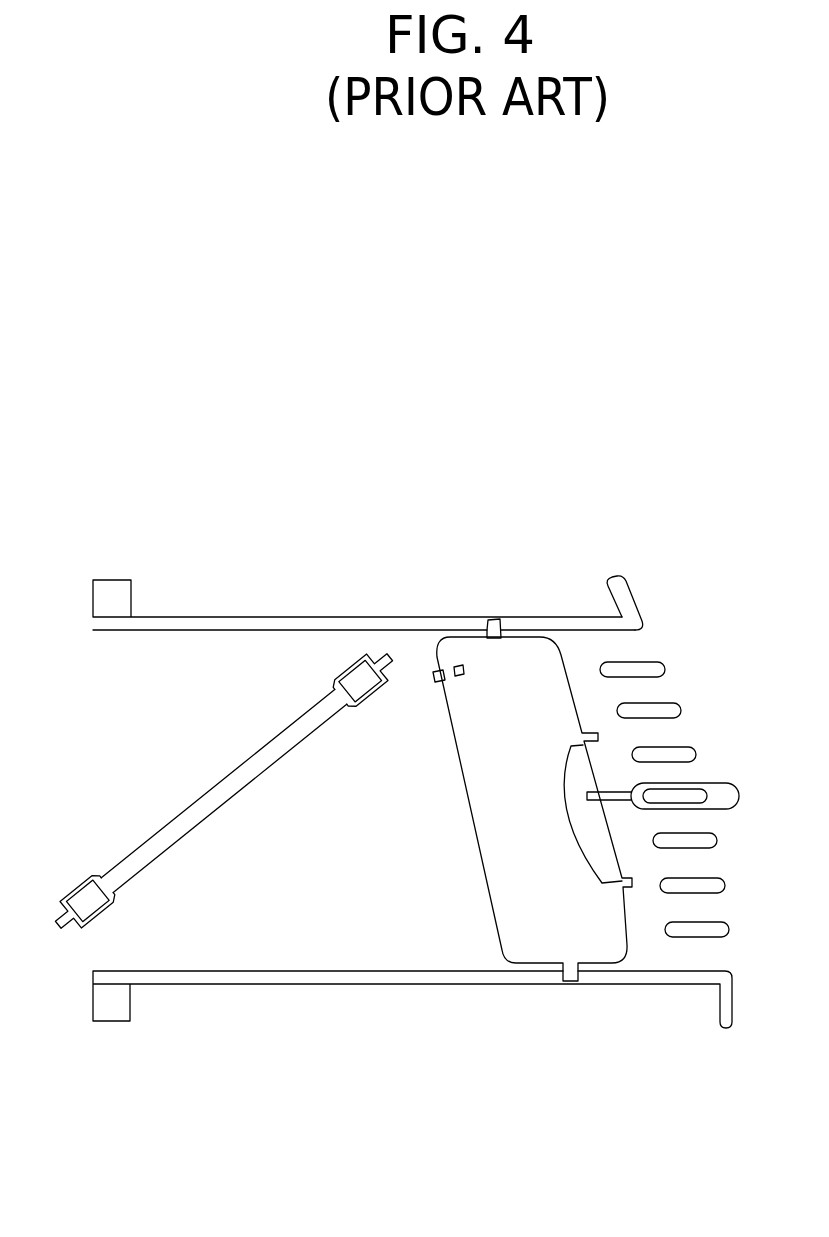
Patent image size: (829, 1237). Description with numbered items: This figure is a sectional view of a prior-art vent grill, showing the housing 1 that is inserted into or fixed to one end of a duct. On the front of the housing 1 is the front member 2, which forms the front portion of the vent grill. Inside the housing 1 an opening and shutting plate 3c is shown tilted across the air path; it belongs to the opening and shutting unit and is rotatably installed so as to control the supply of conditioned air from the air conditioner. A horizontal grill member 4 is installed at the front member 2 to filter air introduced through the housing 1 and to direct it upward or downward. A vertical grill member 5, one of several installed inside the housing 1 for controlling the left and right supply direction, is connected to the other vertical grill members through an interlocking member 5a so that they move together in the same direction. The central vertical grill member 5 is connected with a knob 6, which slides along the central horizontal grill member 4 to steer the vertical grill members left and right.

The housing 1 is at (339, 617).
The front member 2 is at (638, 599).
The opening and shutting plate 3c is at (165, 832).
The horizontal grill member 4 is at (666, 668).
The vertical grill member 5 is at (520, 956).
The interlocking member 5a is at (433, 678).
The knob 6 is at (739, 797).